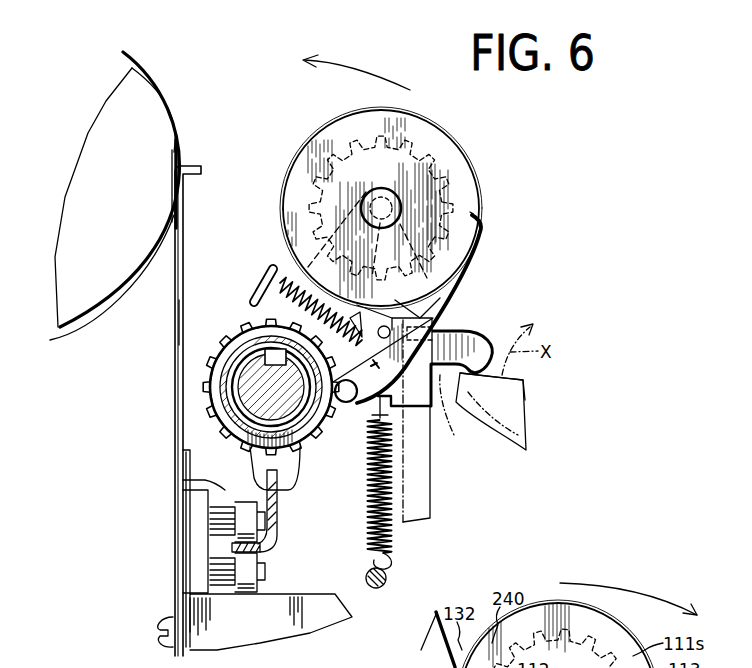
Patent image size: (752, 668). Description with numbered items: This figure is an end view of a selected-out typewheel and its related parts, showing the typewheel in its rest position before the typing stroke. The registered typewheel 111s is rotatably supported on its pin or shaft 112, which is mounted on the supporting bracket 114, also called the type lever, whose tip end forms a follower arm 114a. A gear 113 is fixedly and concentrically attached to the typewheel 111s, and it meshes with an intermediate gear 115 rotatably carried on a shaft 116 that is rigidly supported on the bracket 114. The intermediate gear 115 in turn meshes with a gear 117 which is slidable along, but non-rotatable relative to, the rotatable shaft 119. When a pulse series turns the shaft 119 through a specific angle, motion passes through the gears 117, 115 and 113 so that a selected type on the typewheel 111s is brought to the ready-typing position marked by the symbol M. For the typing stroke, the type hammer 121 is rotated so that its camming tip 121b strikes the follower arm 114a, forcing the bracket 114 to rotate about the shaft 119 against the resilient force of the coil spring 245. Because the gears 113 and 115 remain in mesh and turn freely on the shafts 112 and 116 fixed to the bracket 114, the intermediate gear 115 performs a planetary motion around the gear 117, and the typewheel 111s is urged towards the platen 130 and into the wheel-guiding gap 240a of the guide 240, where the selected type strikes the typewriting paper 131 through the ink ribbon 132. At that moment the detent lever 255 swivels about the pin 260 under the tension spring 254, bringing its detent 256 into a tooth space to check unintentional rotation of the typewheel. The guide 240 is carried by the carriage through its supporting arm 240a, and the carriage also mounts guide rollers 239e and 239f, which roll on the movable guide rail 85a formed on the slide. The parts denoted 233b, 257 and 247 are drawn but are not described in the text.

The platen 130 is at (105, 137).
The typewriting paper 131 is at (152, 80).
The ink ribbon 132 is at (180, 148).
The guide 240 is at (198, 166).
The wheel-guiding gap 240a is at (176, 322).
The gear 117 is at (238, 393).
The rotatable shaft 119 is at (236, 418).
The guide roller 239e is at (240, 500).
The guide roller 239f is at (240, 572).
The tension spring 254 is at (263, 283).
The intermediate gear 115 is at (252, 320).
The shaft 116 is at (290, 268).
The ready-typing position M is at (283, 208).
The pin or shaft 112 is at (368, 196).
The registered typewheel 111s is at (450, 152).
The gear 113 is at (456, 195).
The detent 256 is at (478, 214).
The detent lever 255 is at (486, 236).
The supporting bracket 114 is at (462, 325).
The follower arm 114a is at (488, 340).
The camming tip 121b is at (465, 388).
The type hammer 121 is at (540, 441).
The channel member 233b is at (440, 421).
The pin 260 is at (347, 404).
The stem 257 is at (290, 487).
The movable guide rail 85a is at (262, 552).
The coil spring 245 is at (389, 546).
The base plate 247 is at (228, 637).